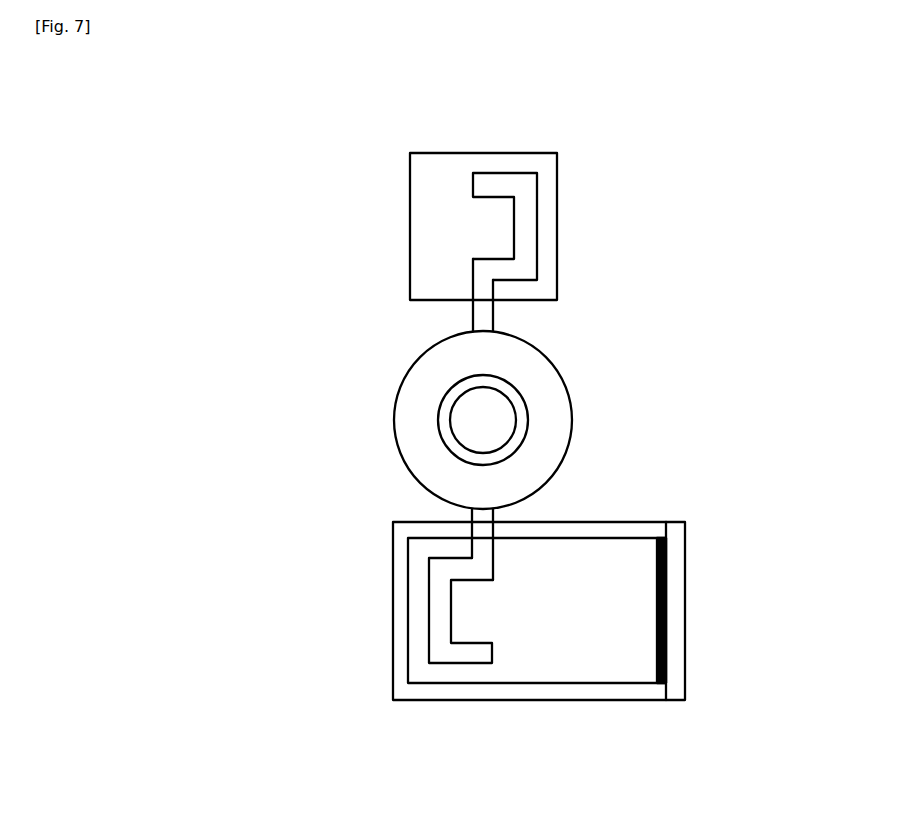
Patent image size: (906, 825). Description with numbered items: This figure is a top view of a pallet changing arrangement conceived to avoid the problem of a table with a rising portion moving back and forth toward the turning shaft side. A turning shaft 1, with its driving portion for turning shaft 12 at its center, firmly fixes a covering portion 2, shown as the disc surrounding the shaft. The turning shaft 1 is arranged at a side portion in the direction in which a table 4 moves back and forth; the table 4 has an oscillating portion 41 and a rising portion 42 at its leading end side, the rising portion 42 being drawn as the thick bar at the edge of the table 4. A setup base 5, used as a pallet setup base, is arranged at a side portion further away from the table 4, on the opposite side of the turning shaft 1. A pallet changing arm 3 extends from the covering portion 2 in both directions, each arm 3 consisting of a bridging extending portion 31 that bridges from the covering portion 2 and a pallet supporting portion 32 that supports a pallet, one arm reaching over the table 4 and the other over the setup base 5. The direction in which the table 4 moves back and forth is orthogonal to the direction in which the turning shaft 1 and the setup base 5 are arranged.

The turning shaft 1 is at (467, 418).
The driving portion for turning shaft 12 is at (455, 385).
The covering portion 2 is at (565, 382).
The pallet changing arm 3 is at (456, 418).
The bridging extending portion 31 is at (478, 283).
The pallet supporting portion 32 is at (527, 228).
The table 4 is at (591, 619).
The oscillating portion of table 41 is at (657, 638).
The rising portion of table 42 is at (672, 588).
The setup base 5 is at (453, 173).